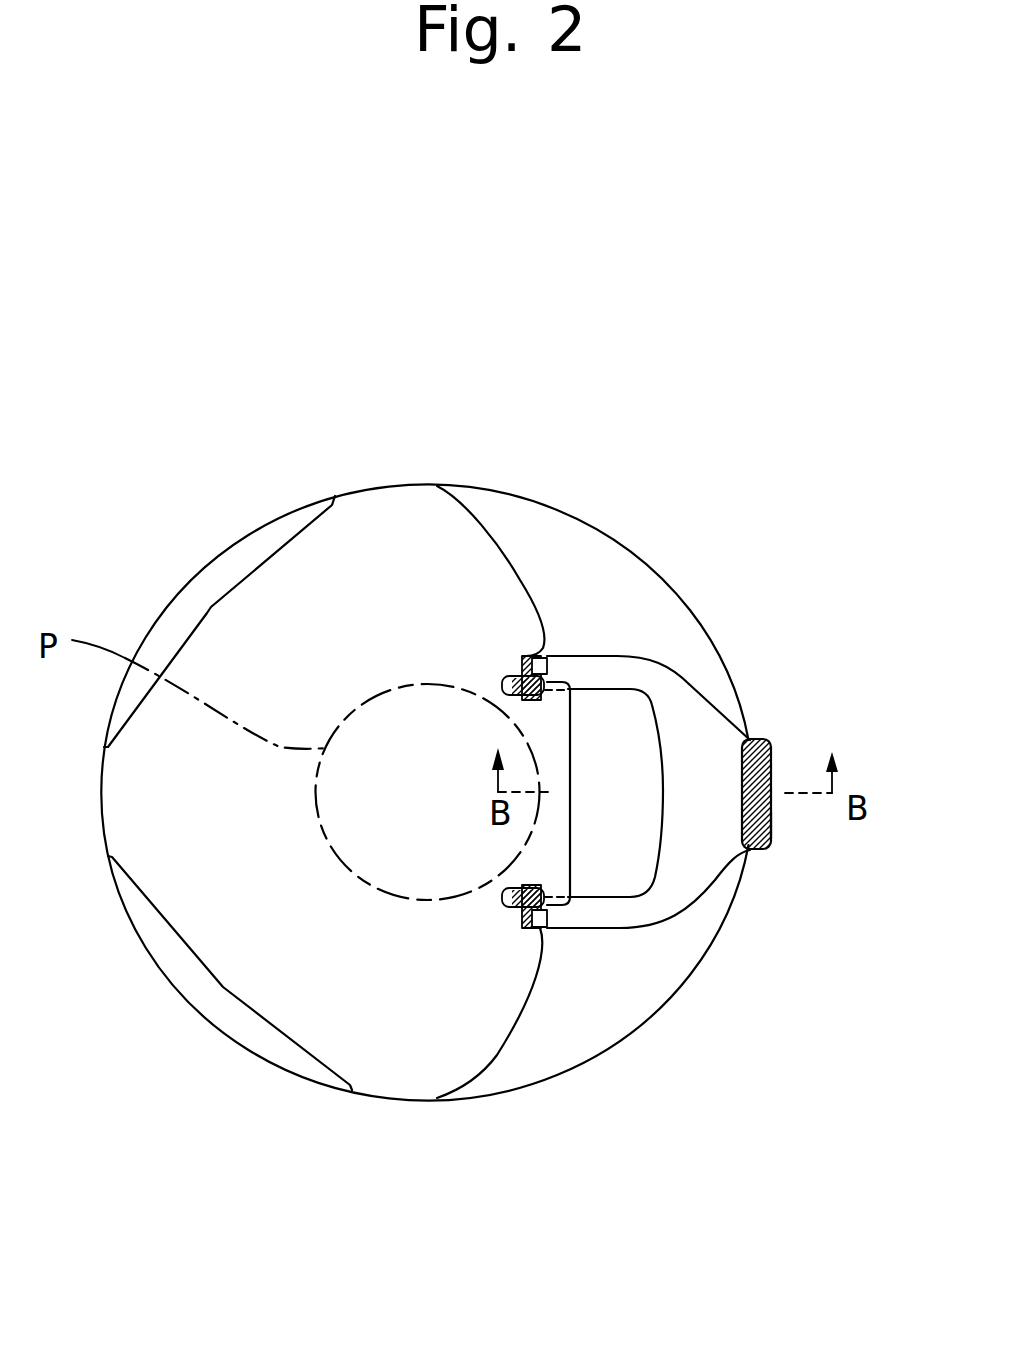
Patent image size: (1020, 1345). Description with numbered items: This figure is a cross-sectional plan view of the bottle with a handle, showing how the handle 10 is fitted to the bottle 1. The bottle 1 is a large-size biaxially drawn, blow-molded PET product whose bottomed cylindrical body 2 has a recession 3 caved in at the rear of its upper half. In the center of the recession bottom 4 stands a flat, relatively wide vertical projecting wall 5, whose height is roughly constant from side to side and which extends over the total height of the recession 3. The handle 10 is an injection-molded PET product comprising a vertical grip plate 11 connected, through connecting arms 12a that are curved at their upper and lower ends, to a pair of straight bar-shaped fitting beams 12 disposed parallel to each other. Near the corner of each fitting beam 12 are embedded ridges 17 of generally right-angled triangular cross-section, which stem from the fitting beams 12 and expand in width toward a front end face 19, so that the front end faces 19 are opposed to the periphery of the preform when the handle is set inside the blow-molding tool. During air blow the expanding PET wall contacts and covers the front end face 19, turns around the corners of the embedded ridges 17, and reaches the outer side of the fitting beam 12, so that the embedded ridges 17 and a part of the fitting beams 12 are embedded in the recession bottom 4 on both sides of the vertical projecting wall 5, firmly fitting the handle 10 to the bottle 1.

The bottle 1 is at (276, 486).
The bottomed cylindrical body 2 is at (177, 593).
The recession 3 is at (630, 965).
The recession bottom 4 is at (521, 1015).
The vertical projecting wall 5 is at (565, 772).
The handle 10 is at (782, 756).
The vertical grip plate 11 is at (773, 825).
The fitting beams 12 is at (540, 653).
The connecting arms 12a is at (620, 678).
The embedded ridges 17 is at (512, 698).
The front end face 19 is at (537, 705).